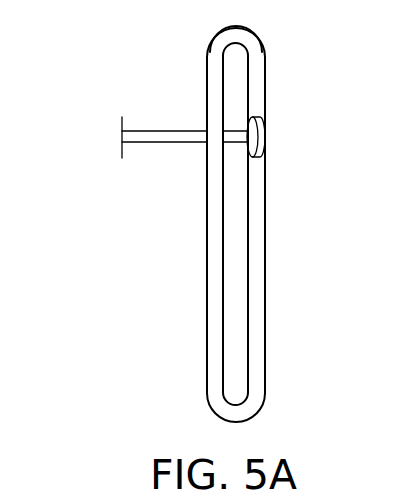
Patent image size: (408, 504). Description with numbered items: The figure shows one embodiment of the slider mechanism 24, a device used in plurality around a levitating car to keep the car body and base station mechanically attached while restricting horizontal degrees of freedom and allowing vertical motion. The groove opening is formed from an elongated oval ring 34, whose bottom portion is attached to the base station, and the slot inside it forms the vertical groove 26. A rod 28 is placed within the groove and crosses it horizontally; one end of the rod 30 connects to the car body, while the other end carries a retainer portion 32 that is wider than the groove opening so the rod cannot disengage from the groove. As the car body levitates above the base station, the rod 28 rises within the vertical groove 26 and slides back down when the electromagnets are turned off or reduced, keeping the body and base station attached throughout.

The slider mechanism 24 is at (275, 333).
The vertical groove 26 is at (236, 258).
The rod 28 is at (165, 131).
The end of the rod 30 is at (122, 137).
The retainer portion 32 is at (267, 145).
The oval ring 34 is at (241, 38).